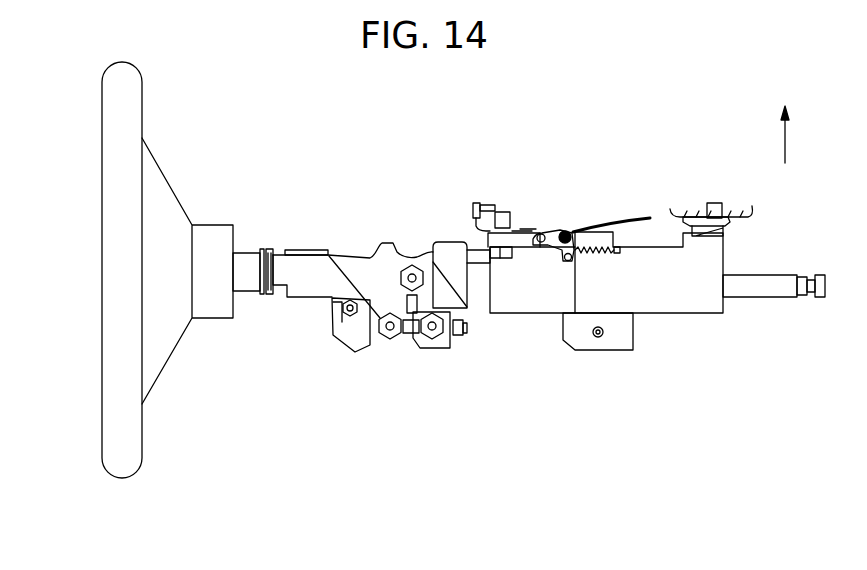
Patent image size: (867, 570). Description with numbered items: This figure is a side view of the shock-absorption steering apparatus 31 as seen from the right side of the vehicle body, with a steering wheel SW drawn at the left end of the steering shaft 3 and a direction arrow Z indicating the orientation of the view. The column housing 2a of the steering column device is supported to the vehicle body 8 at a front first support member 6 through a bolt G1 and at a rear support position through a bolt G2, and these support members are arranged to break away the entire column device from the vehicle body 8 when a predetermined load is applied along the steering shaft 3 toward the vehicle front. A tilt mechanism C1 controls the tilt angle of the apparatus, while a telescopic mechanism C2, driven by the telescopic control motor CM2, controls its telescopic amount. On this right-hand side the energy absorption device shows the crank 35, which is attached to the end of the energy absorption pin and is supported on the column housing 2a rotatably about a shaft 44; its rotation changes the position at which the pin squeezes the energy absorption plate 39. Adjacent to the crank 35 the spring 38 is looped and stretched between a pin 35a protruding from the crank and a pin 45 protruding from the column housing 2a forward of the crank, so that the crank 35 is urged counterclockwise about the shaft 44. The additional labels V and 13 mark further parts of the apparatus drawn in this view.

The steering wheel SW is at (112, 112).
The shock-absorption steering apparatus 31 is at (290, 154).
The bolt V is at (473, 205).
The bolt G2 is at (496, 212).
The vehicle body 8 is at (540, 219).
The crank 35 is at (548, 231).
The shaft 44 is at (568, 231).
The pin 35a is at (565, 260).
The energy absorption plate 39 is at (650, 217).
The spring 38 is at (598, 254).
The pin 45 is at (620, 253).
The column housing 13 is at (522, 315).
The tilt mechanism C1 is at (394, 341).
The telescopic mechanism C2 is at (563, 345).
The telescopic control motor CM2 is at (602, 352).
The column housing 2a is at (690, 312).
The first support member 6 is at (728, 229).
The bolt G1 is at (713, 203).
The steering shaft 3 is at (777, 290).
The Z axis direction Z is at (788, 122).